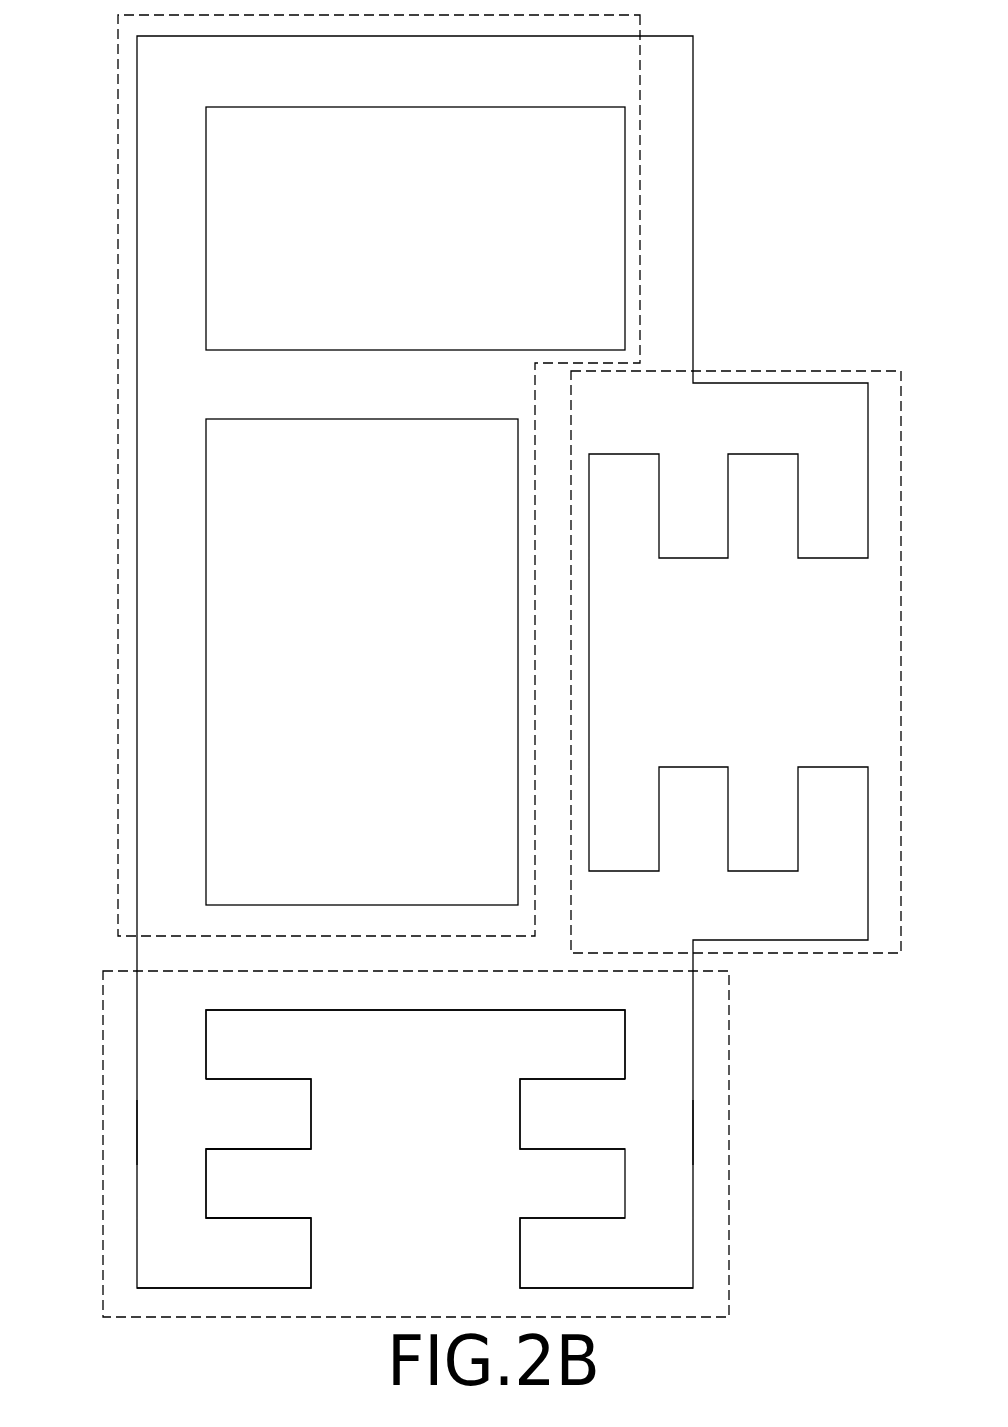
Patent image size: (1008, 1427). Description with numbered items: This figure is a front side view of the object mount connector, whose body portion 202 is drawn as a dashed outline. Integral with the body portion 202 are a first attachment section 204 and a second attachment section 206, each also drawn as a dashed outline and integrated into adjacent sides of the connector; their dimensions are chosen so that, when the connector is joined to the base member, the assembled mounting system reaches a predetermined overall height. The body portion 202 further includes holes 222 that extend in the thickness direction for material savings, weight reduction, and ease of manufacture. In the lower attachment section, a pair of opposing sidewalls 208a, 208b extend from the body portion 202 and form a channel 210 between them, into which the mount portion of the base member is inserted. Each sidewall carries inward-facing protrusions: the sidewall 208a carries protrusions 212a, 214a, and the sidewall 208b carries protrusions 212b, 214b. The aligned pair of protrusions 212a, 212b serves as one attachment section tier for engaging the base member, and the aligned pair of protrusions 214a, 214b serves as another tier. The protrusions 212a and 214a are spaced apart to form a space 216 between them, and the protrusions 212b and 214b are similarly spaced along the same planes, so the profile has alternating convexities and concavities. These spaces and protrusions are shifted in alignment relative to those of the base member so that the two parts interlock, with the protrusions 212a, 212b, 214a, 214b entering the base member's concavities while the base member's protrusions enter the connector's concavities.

The body portion 202 is at (641, 73).
The first attachment section 204 is at (787, 370).
The second attachment section 206 is at (730, 1007).
The holes 222 is at (434, 237).
The channel 210 is at (432, 1147).
The space 216 is at (268, 1194).
The protrusion 214a is at (277, 1121).
The protrusion 214b is at (547, 1117).
The protrusion 212a is at (284, 1256).
The protrusion 212b is at (555, 1258).
The sidewall 208a is at (137, 1133).
The sidewall 208b is at (694, 1137).